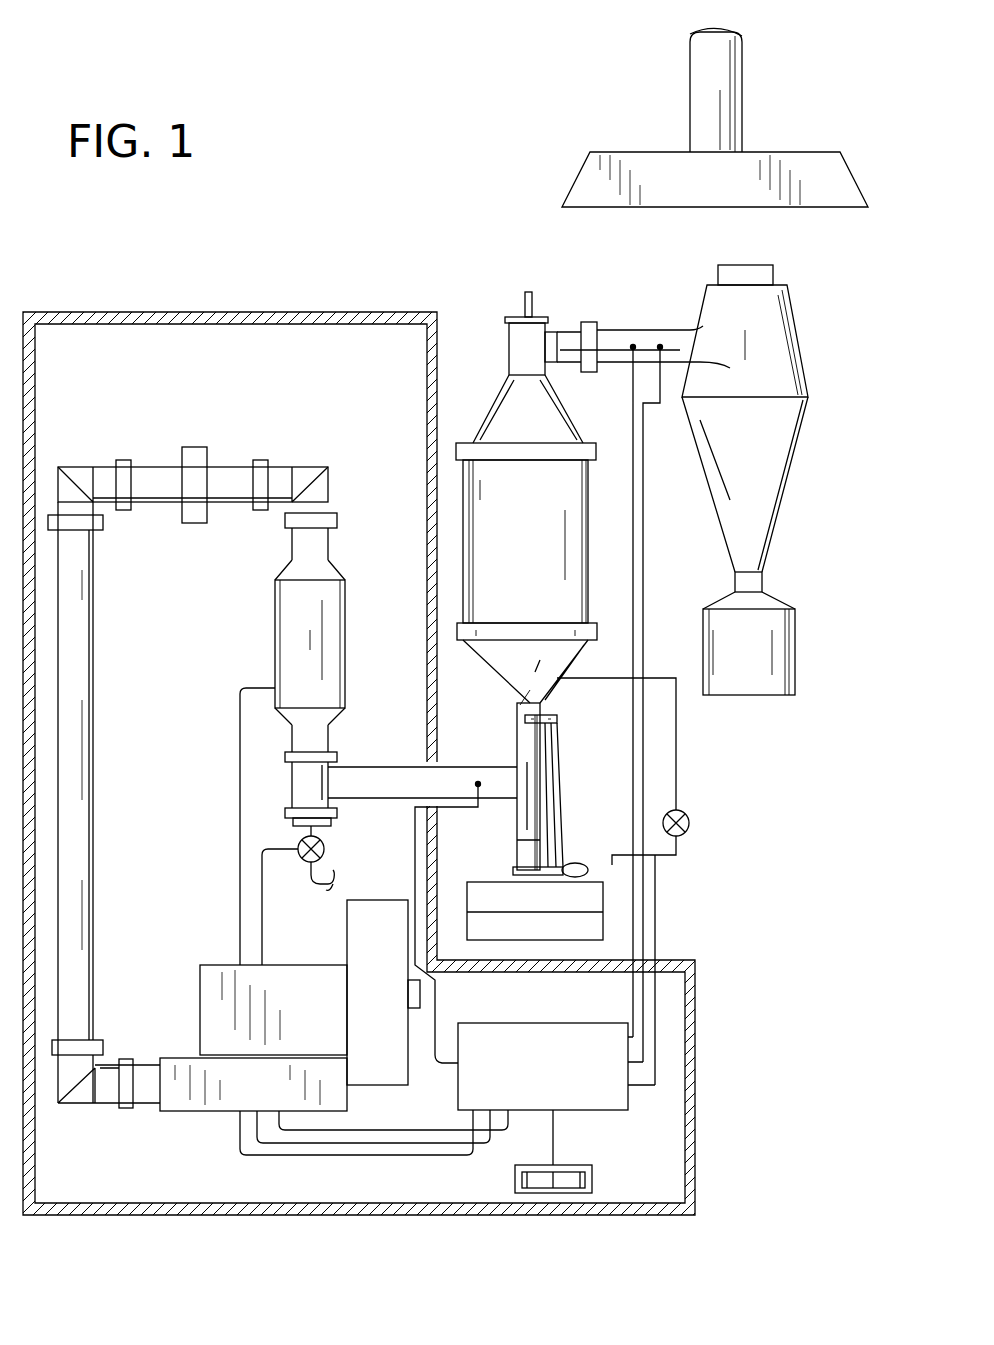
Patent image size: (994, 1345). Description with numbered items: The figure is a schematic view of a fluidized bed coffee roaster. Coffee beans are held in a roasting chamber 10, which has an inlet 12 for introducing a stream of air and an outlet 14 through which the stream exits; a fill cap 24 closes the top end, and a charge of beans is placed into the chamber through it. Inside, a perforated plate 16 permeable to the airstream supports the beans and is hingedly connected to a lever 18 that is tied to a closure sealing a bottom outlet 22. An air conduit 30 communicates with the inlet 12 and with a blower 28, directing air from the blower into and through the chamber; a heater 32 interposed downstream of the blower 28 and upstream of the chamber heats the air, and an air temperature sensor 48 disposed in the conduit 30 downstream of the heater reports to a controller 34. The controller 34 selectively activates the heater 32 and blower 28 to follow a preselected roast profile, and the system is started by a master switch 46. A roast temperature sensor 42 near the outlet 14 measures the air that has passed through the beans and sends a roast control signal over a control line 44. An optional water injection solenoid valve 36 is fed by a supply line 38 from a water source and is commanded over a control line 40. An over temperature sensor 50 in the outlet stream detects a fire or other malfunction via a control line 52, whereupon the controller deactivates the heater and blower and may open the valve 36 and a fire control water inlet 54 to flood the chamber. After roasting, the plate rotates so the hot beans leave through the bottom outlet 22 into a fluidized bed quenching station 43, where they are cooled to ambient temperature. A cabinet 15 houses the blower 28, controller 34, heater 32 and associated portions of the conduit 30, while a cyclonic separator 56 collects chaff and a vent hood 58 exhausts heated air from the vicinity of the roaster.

The roasting chamber 10 is at (468, 530).
The inlet 12 is at (517, 748).
The outlet 14 is at (555, 340).
The cabinet 15 is at (190, 312).
The perforated plate 16 is at (541, 706).
The lever 18 is at (563, 822).
The bottom outlet 22 is at (517, 820).
The fill cap 24 is at (520, 305).
The blower 28 is at (200, 1003).
The air conduit 30 is at (95, 680).
The heater 32 is at (282, 623).
The controller 34 is at (510, 1040).
The water injection solenoid valve 36 is at (325, 848).
The supply line 38 is at (320, 895).
The control line 40 is at (263, 920).
The roast temperature sensor 42 is at (633, 345).
The fluidized bed quenching station 43 is at (493, 878).
The control line 44 is at (633, 1003).
The master switch 46 is at (512, 1183).
The air temperature sensor 48 is at (478, 782).
The over temperature sensor 50 is at (660, 345).
The control line 52 is at (643, 537).
The fire control water inlet 54 is at (688, 818).
The separator 56 is at (782, 515).
The vent hood 58 is at (690, 88).